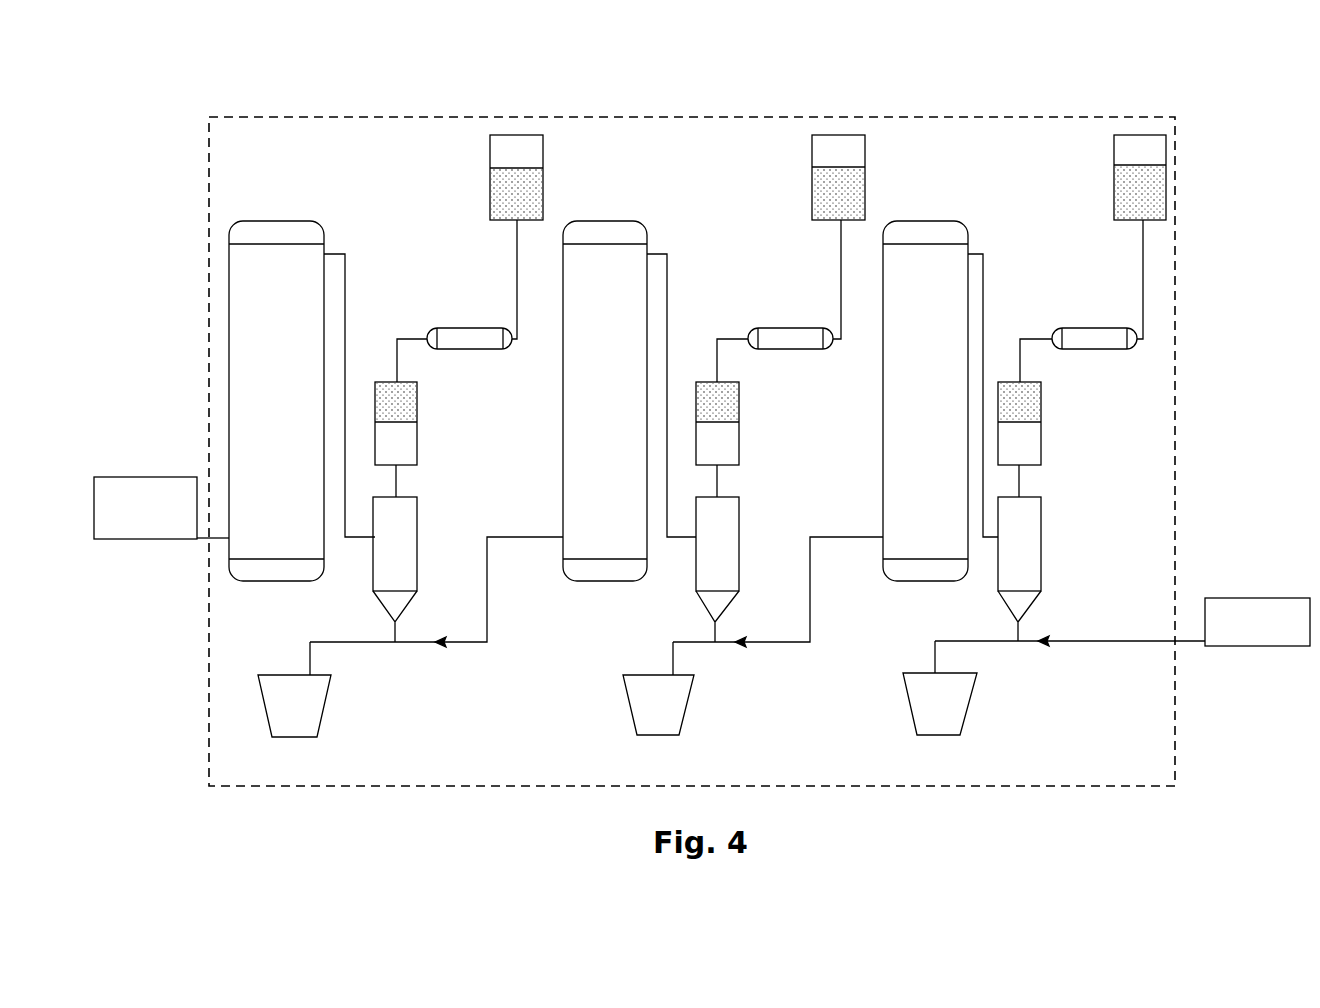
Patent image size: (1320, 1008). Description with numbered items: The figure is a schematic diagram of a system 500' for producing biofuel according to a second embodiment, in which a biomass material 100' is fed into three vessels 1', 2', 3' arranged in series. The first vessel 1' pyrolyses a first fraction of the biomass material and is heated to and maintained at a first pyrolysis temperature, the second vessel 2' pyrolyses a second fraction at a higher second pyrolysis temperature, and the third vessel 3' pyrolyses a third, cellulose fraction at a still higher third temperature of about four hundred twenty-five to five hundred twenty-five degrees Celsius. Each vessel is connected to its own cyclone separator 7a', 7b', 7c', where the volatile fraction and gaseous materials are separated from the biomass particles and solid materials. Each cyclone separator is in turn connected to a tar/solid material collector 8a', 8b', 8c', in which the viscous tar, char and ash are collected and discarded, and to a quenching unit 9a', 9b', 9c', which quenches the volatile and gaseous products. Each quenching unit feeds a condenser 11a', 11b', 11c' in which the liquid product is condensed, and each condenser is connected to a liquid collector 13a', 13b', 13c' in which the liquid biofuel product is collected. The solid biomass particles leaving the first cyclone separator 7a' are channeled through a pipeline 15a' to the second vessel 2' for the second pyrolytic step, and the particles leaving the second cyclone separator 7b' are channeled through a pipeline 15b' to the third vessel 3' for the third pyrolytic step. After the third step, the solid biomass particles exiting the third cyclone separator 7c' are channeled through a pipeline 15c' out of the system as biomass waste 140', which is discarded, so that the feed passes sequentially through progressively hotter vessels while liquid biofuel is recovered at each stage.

The system 500' is at (692, 425).
The biomass material 100' is at (161, 470).
The biomass waste 140' is at (1254, 584).
The first vessel 1' is at (274, 363).
The second vessel 2' is at (605, 366).
The third vessel 3' is at (925, 366).
The liquid collector 13a' is at (480, 237).
The liquid collector 13b' is at (799, 237).
The liquid collector 13c' is at (1105, 237).
The condenser 11a' is at (460, 366).
The condenser 11b' is at (782, 358).
The condenser 11c' is at (1083, 358).
The quenching unit 9a' is at (429, 439).
The quenching unit 9b' is at (749, 439).
The quenching unit 9c' is at (1056, 439).
The cyclone separator 7a' is at (361, 569).
The cyclone separator 7b' is at (679, 569).
The cyclone separator 7c' is at (994, 569).
The tar/solid material collector 8a' is at (327, 691).
The tar/solid material collector 8b' is at (686, 691).
The tar/solid material collector 8c' is at (970, 690).
The pipeline 15a' is at (436, 622).
The pipeline 15b' is at (778, 623).
The pipeline 15c' is at (1070, 671).